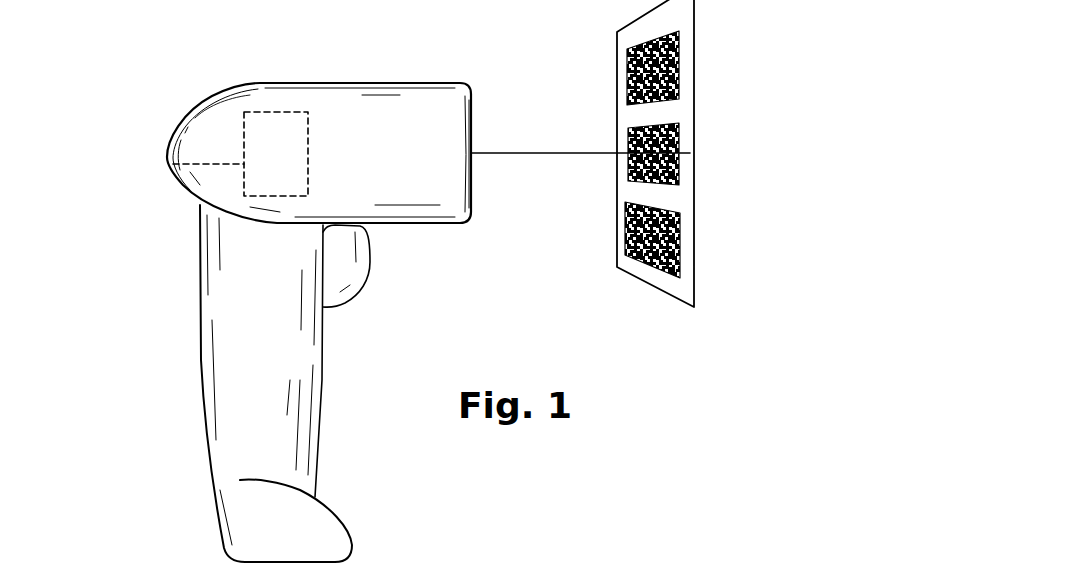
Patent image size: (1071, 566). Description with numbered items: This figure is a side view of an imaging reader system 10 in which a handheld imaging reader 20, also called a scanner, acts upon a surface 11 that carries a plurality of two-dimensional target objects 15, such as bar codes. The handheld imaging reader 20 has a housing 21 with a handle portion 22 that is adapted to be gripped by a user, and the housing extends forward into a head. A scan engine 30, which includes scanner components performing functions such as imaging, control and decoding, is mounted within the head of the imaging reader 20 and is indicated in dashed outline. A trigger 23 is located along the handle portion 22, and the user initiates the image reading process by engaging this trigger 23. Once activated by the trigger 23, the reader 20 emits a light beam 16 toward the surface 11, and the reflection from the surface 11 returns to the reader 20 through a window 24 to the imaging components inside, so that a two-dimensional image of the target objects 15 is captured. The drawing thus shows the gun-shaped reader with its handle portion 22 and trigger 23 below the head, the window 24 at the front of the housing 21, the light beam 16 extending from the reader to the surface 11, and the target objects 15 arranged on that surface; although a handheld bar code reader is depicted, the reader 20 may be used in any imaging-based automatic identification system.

The imaging reader system 10 is at (489, 70).
The surface 11 is at (694, 265).
The two-dimensional target objects 15 is at (678, 170).
The light beam 16 is at (552, 153).
The handheld imaging reader 20 is at (268, 36).
The housing 21 is at (173, 128).
The handle portion 22 is at (202, 373).
The trigger 23 is at (357, 272).
The window 24 is at (473, 178).
The scan engine 30 is at (170, 173).